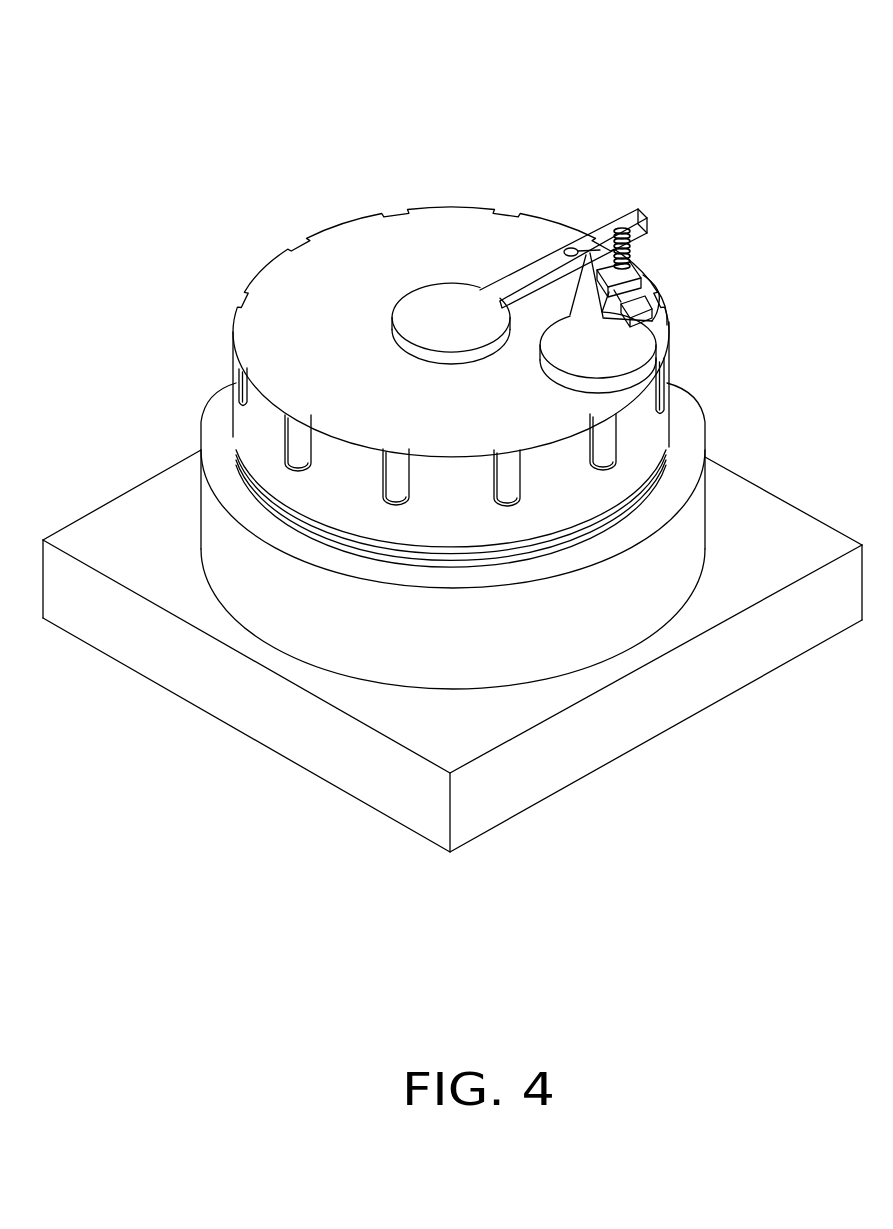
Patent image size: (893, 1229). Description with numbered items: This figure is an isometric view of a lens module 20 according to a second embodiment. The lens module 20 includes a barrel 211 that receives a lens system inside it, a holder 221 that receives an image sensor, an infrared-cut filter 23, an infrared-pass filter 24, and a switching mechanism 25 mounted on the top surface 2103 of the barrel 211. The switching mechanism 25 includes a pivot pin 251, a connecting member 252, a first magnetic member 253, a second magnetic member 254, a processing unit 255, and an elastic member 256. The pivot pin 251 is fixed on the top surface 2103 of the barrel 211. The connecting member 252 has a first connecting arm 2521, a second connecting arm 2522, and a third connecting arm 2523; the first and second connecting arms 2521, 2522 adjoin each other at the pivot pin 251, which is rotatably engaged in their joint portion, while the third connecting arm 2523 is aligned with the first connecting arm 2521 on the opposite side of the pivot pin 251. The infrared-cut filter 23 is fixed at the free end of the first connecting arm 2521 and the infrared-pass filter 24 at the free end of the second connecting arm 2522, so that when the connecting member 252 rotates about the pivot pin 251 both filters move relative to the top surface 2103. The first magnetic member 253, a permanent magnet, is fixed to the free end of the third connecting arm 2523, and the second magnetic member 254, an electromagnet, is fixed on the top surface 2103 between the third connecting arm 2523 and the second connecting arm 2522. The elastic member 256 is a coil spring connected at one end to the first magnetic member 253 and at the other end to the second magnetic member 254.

The lens module 20 is at (302, 160).
The top surface 2103 is at (272, 300).
The barrel 211 is at (260, 431).
The holder 221 is at (158, 507).
The infrared-cut filter 23 is at (400, 317).
The infrared-pass filter 24 is at (620, 358).
The switching mechanism 25 is at (649, 171).
The connecting member 252 is at (611, 164).
The first connecting arm 2521 is at (503, 287).
The second connecting arm 2522 is at (572, 295).
The third connecting arm 2523 is at (576, 247).
The first magnetic member 253 is at (630, 217).
The elastic member 256 is at (626, 239).
The pivot pin 251 is at (627, 257).
The second magnetic member 254 is at (641, 289).
The processing unit 255 is at (688, 315).